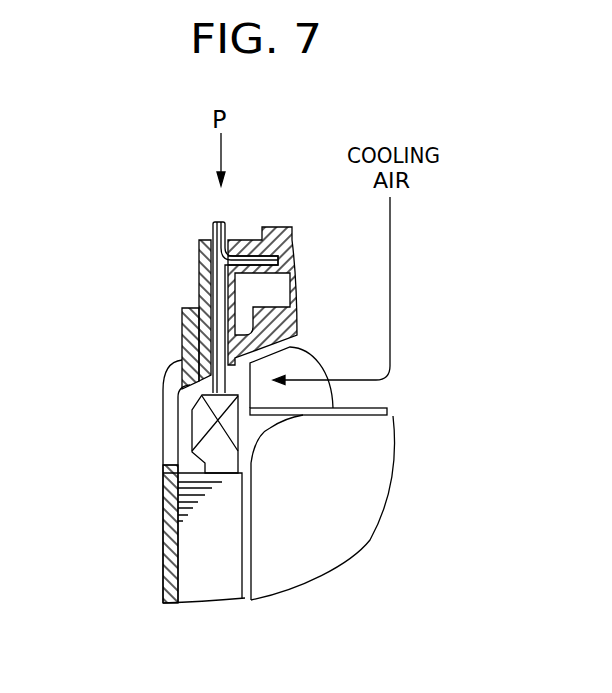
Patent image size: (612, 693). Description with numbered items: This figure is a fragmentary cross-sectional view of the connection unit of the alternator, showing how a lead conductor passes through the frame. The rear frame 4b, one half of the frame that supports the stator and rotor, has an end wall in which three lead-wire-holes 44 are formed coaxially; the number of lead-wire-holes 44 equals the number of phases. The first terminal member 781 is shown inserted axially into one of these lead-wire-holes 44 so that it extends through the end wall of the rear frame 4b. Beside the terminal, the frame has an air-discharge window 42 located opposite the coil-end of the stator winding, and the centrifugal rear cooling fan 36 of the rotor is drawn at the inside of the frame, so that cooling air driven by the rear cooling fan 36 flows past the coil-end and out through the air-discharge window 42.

The air-discharge window 42 is at (168, 430).
The rear frame 4b is at (183, 333).
The lead-wire-hole 44 is at (198, 298).
The first terminal member 781 is at (199, 250).
The centrifugal rear cooling fan 36 is at (318, 402).